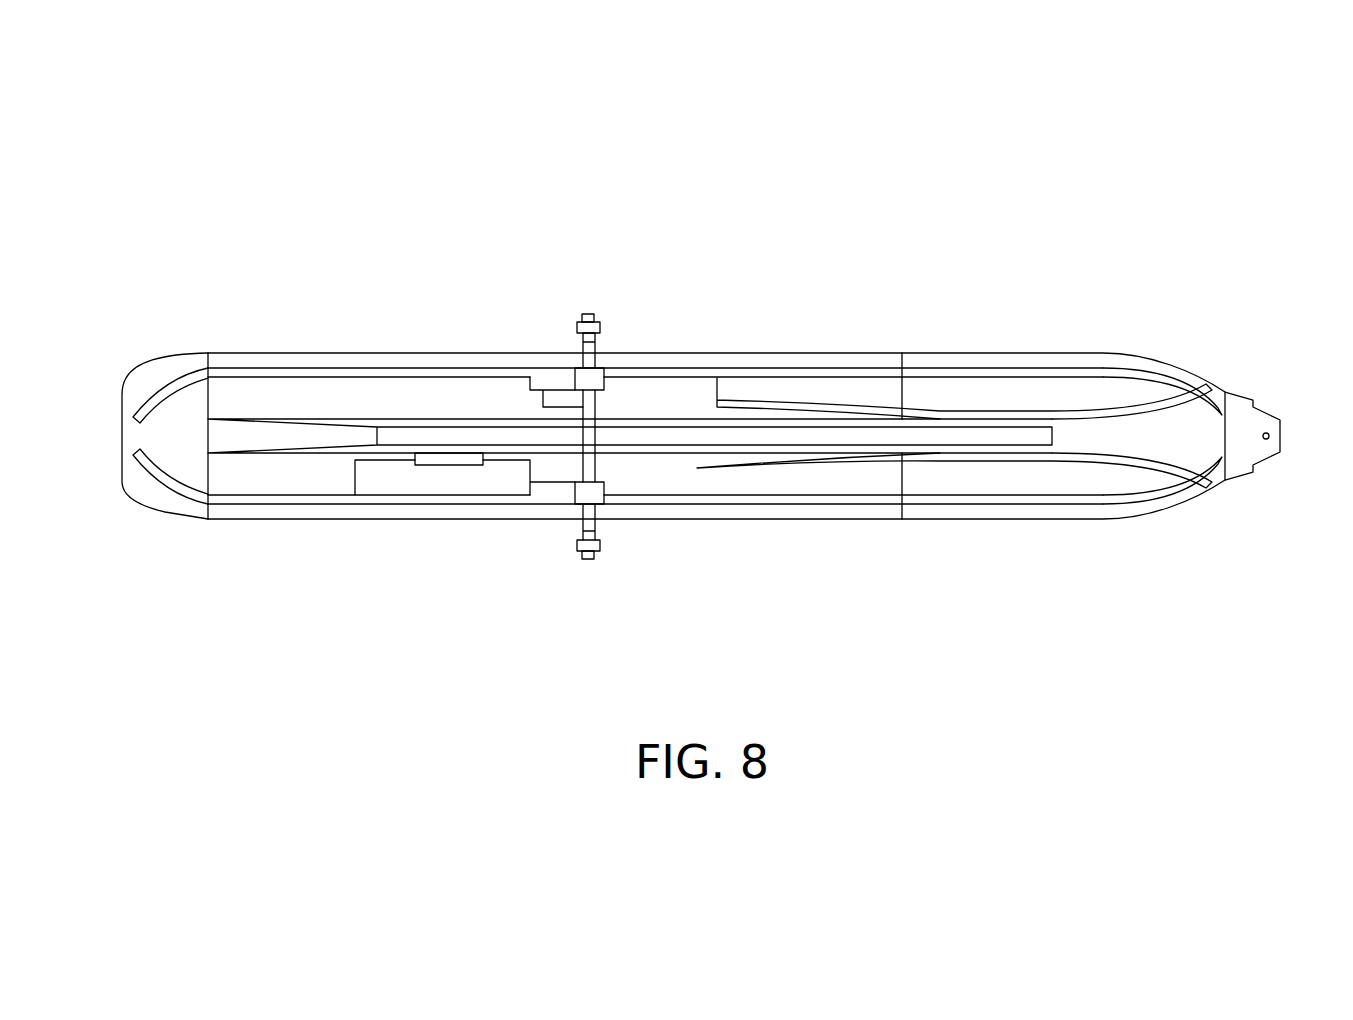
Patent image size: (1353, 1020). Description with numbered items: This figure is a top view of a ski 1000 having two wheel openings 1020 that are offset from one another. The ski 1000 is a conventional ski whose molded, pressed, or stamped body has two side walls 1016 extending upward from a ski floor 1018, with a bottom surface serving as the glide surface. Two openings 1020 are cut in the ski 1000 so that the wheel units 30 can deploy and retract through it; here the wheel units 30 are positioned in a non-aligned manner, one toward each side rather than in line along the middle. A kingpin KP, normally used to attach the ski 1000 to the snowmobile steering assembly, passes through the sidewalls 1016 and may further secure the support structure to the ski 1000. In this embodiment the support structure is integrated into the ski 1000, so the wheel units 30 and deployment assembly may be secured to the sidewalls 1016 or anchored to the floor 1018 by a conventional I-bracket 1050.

The ski 1000 is at (893, 174).
The side walls 1016 is at (388, 372).
The ski floor 1018 is at (658, 390).
The openings 1020 is at (752, 392).
The wheel units 30 is at (843, 392).
The I-bracket 1050 is at (452, 477).
The kingpin KP is at (580, 523).